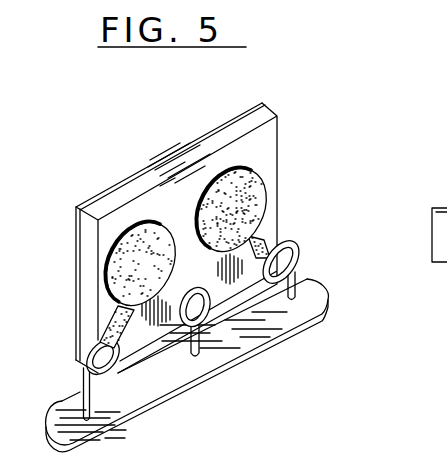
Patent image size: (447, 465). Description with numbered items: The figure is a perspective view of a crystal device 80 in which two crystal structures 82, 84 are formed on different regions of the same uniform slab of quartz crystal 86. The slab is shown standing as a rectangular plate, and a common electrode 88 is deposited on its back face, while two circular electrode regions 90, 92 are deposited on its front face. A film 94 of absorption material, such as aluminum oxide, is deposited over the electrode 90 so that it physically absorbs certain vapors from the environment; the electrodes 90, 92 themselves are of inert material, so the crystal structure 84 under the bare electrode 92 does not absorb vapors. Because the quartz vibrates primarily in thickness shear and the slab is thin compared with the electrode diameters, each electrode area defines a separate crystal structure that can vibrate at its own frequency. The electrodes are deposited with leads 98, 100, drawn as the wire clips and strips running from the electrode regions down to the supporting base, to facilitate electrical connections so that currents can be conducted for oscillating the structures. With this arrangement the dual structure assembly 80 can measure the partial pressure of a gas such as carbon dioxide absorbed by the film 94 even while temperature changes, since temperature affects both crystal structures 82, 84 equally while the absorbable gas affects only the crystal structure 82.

The crystal device 80 is at (284, 143).
The crystal structure 82 is at (133, 228).
The crystal structure 84 is at (224, 176).
The slab of quartz crystal 86 is at (87, 332).
The common electrode 88 is at (76, 227).
The electrode region 90 is at (118, 257).
The electrode region 92 is at (247, 205).
The film of absorption material 94 is at (130, 279).
The lead 98 is at (97, 332).
The lead 100 is at (272, 239).